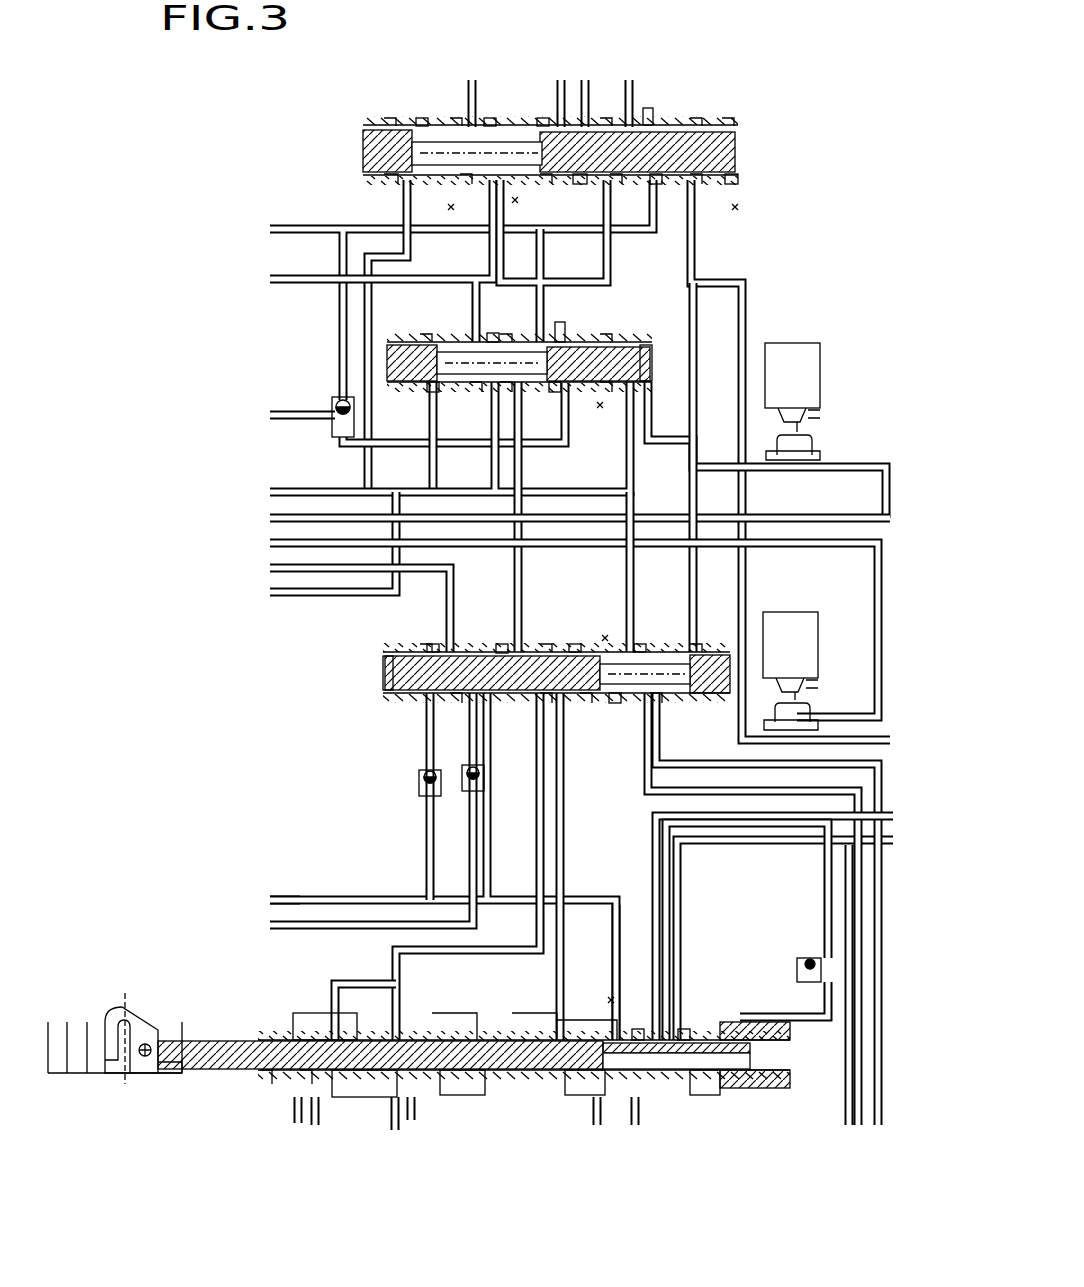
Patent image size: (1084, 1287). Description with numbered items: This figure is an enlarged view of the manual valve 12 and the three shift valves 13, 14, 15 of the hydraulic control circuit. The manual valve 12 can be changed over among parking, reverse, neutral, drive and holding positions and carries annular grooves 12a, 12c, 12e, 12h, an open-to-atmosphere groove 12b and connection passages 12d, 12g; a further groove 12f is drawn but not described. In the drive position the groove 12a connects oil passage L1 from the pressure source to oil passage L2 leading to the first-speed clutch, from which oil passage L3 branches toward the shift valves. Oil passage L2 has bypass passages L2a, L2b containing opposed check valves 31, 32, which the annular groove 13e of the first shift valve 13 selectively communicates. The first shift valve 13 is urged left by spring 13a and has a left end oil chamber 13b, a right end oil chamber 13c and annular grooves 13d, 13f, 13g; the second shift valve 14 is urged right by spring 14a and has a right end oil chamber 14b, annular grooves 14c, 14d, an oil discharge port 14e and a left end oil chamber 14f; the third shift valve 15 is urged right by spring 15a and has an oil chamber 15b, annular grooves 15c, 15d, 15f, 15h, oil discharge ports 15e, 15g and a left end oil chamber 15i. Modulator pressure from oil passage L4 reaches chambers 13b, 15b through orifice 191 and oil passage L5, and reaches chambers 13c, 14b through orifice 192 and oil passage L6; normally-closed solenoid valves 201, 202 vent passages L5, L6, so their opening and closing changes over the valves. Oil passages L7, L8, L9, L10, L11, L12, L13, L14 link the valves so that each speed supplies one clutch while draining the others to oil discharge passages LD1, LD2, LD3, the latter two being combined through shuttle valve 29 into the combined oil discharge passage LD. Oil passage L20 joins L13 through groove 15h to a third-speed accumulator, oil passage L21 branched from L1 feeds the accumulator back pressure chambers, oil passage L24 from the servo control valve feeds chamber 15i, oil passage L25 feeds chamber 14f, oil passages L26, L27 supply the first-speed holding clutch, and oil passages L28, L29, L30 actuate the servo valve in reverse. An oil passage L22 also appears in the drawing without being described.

The manual valve 12 is at (416, 1061).
The annular groove 12a is at (480, 1075).
The open-to-atmosphere groove 12b is at (580, 1077).
The annular groove 12c is at (700, 1082).
The connection passage 12d is at (330, 1028).
The annular groove 12e is at (373, 1075).
The manual valve port 12f is at (637, 1029).
The connection passage 12g is at (760, 1088).
The annular groove 12h is at (683, 1029).
The No. 1 shift valve 13 is at (514, 695).
The spring 13a is at (675, 692).
The left end oil chamber 13b is at (383, 692).
The right end oil chamber 13c is at (640, 644).
The annular groove 13d is at (502, 650).
The annular groove 13e is at (433, 644).
The annular groove 13f is at (615, 707).
The annular groove 13g is at (575, 644).
The No. 2 shift valve 14 is at (544, 359).
The spring 14a is at (433, 392).
The right end oil chamber 14b is at (653, 372).
The annular groove 14c is at (493, 333).
The annular groove 14d is at (555, 392).
The oil discharge port 14e is at (565, 327).
The left end oil chamber 14f is at (447, 370).
The No. 3 shift valve 15 is at (553, 156).
The spring 15a is at (422, 118).
The right-hand side oil chamber 15b is at (734, 185).
The annular groove 15c is at (580, 185).
The annular groove 15d is at (657, 185).
The oil discharge port 15e is at (653, 114).
The annular groove 15f is at (543, 118).
The oil discharge port 15g is at (513, 182).
The annular groove 15h is at (490, 118).
The left end oil chamber 15i is at (393, 122).
The orifice 191 is at (812, 731).
The orifice 192 is at (825, 470).
The No. 1 solenoid valve 201 is at (829, 631).
The No. 2 solenoid valve 202 is at (829, 351).
The shuttle valve 29 is at (340, 398).
The check valve 31 is at (472, 792).
The check valve 32 is at (420, 780).
The No. 1 oil passage L1 is at (413, 1116).
The No. 2 oil passage L2 is at (288, 900).
The No. 1 bypass passage L2a is at (468, 870).
The No. 2 bypass passage L2b is at (426, 847).
The No. 3 oil passage L3 is at (616, 942).
The No. 4 oil passage L4 is at (807, 522).
The No. 5 oil passage L5 is at (693, 258).
The No. 6 oil passage L6 is at (674, 441).
The No. 7 oil passage L7 is at (490, 492).
The No. 8 oil passage L8 is at (520, 570).
The No. 9 oil passage L9 is at (538, 798).
The No. 10 oil passage L10 is at (585, 80).
The No. 11 oil passage L11 is at (660, 891).
The No. 12 oil passage L12 is at (629, 80).
The No. 13 oil passage L13 is at (600, 277).
The No. 14 oil passage L14 is at (530, 270).
The No. 20 oil passage L20 is at (472, 80).
The No. 21 oil passage L21 is at (746, 557).
The oil line L22 is at (396, 1120).
The No. 24 oil passage L24 is at (365, 266).
The No. 25 oil passage L25 is at (282, 599).
The No. 26 oil passage L26 is at (847, 912).
The No. 27 oil passage L27 is at (631, 570).
The No. 28 oil passage L28 is at (563, 879).
The No. 29 oil passage L29 is at (855, 864).
The No. 30 oil passage L30 is at (757, 1017).
The combined oil discharge passage LD is at (305, 420).
The No. 1 oil discharge passage LD1 is at (561, 80).
The No. 2 oil discharge passage LD2 is at (565, 445).
The No. 3 oil discharge passage LD3 is at (343, 229).